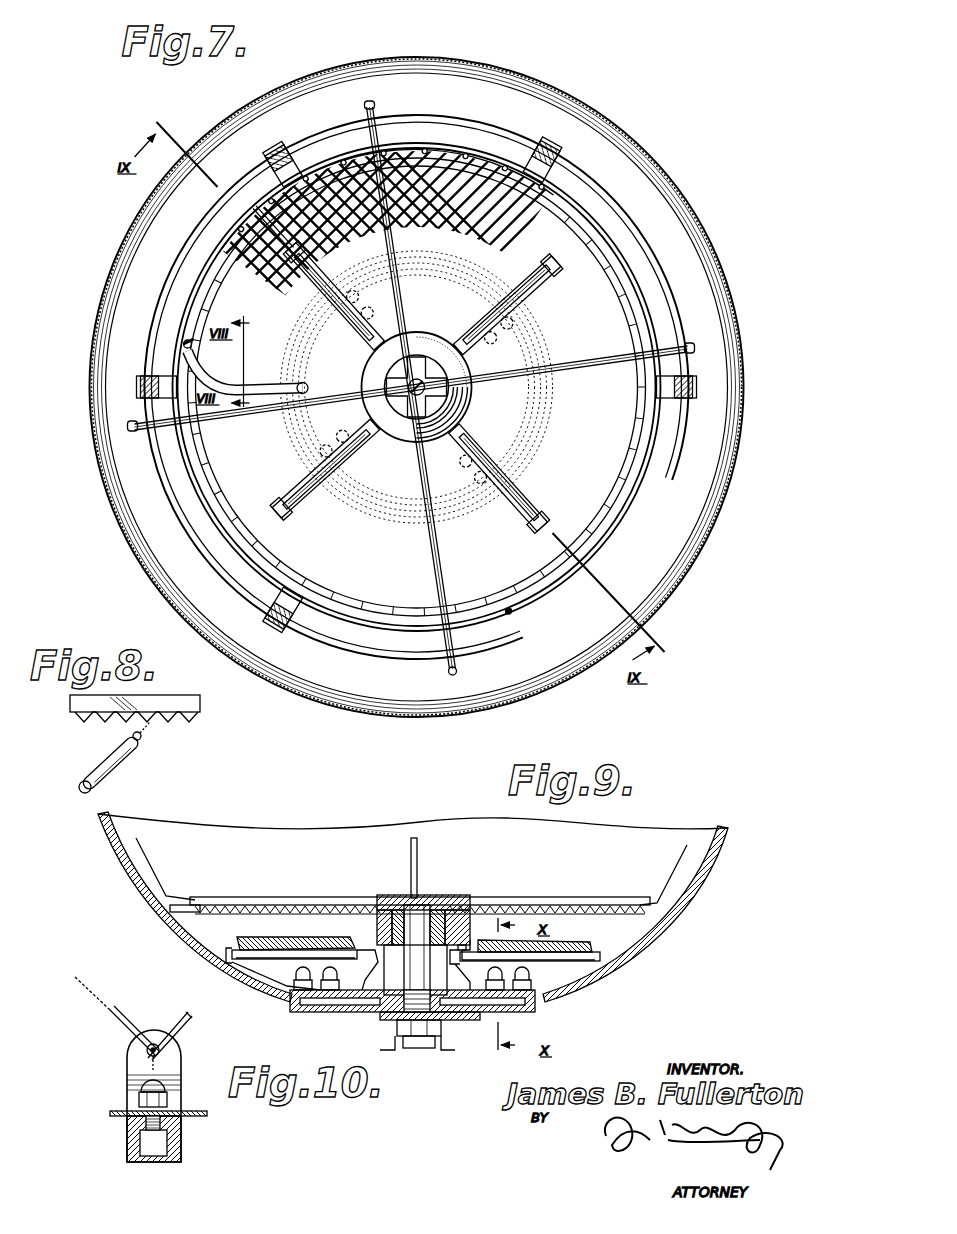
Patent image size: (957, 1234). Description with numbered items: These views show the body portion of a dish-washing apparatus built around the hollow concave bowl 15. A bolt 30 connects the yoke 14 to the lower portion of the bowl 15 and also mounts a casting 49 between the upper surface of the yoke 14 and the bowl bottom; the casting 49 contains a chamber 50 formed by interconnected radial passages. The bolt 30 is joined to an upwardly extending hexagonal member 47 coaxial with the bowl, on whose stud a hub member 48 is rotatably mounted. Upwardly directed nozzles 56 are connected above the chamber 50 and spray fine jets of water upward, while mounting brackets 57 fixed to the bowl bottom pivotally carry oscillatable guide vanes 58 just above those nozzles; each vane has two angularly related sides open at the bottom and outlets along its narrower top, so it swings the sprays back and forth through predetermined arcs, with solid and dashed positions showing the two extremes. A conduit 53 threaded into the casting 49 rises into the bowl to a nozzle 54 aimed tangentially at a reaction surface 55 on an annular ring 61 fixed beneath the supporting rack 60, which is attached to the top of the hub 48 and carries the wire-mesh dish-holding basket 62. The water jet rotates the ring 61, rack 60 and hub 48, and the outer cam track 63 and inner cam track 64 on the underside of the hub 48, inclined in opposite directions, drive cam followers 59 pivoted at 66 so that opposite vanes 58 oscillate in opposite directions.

In FIG. 9, the yoke 14 is at (440, 1042).
In FIG. 7, the hollow concave bowl 15 is at (655, 169).
In FIG. 9, the hollow concave bowl 15 is at (715, 874).
In FIG. 9, the bolt 30 is at (398, 1040).
In FIG. 9, the hexagonal member 47 is at (393, 970).
In FIG. 7, the hub member 48 is at (425, 353).
In FIG. 9, the hub member 48 is at (430, 897).
In FIG. 9, the casting 49 is at (537, 1008).
In FIG. 10, the casting 49 is at (128, 1141).
In FIG. 9, the chamber 50 is at (475, 1004).
In FIG. 10, the chamber 50 is at (160, 1140).
In FIG. 7, the conduit 53 is at (310, 386).
In FIG. 8, the conduit 53 is at (108, 772).
In FIG. 7, the nozzle 54 is at (194, 351).
In FIG. 8, the nozzle 54 is at (143, 740).
In FIG. 7, the reaction surface 55 is at (205, 331).
In FIG. 8, the reaction surface 55 is at (182, 720).
In FIG. 9, the reaction surface 55 is at (202, 913).
In FIG. 7, the upwardly directed nozzles 56 is at (335, 317).
In FIG. 9, the upwardly directed nozzles 56 is at (330, 967).
In FIG. 10, the upwardly directed nozzles 56 is at (160, 1090).
In FIG. 7, the mounting brackets 57 is at (551, 278).
In FIG. 9, the mounting brackets 57 is at (233, 970).
In FIG. 10, the mounting brackets 57 is at (130, 1066).
In FIG. 7, the oscillatable guide vanes 58 is at (382, 319).
In FIG. 9, the oscillatable guide vanes 58 is at (293, 937).
In FIG. 10, the oscillatable guide vanes 58 is at (125, 1028).
In FIG. 9, the cam followers 59 is at (378, 903).
In FIG. 7, the supporting rack 60 is at (664, 444).
In FIG. 9, the supporting rack 60 is at (338, 894).
In FIG. 7, the annular ring 61 is at (600, 542).
In FIG. 8, the annular ring 61 is at (70, 710).
In FIG. 9, the annular ring 61 is at (182, 903).
In FIG. 7, the dish-holding basket 62 is at (208, 242).
In FIG. 9, the outer cam track 63 is at (468, 947).
In FIG. 9, the inner cam track 64 is at (458, 930).
In FIG. 10, the pivot 66 is at (153, 1044).